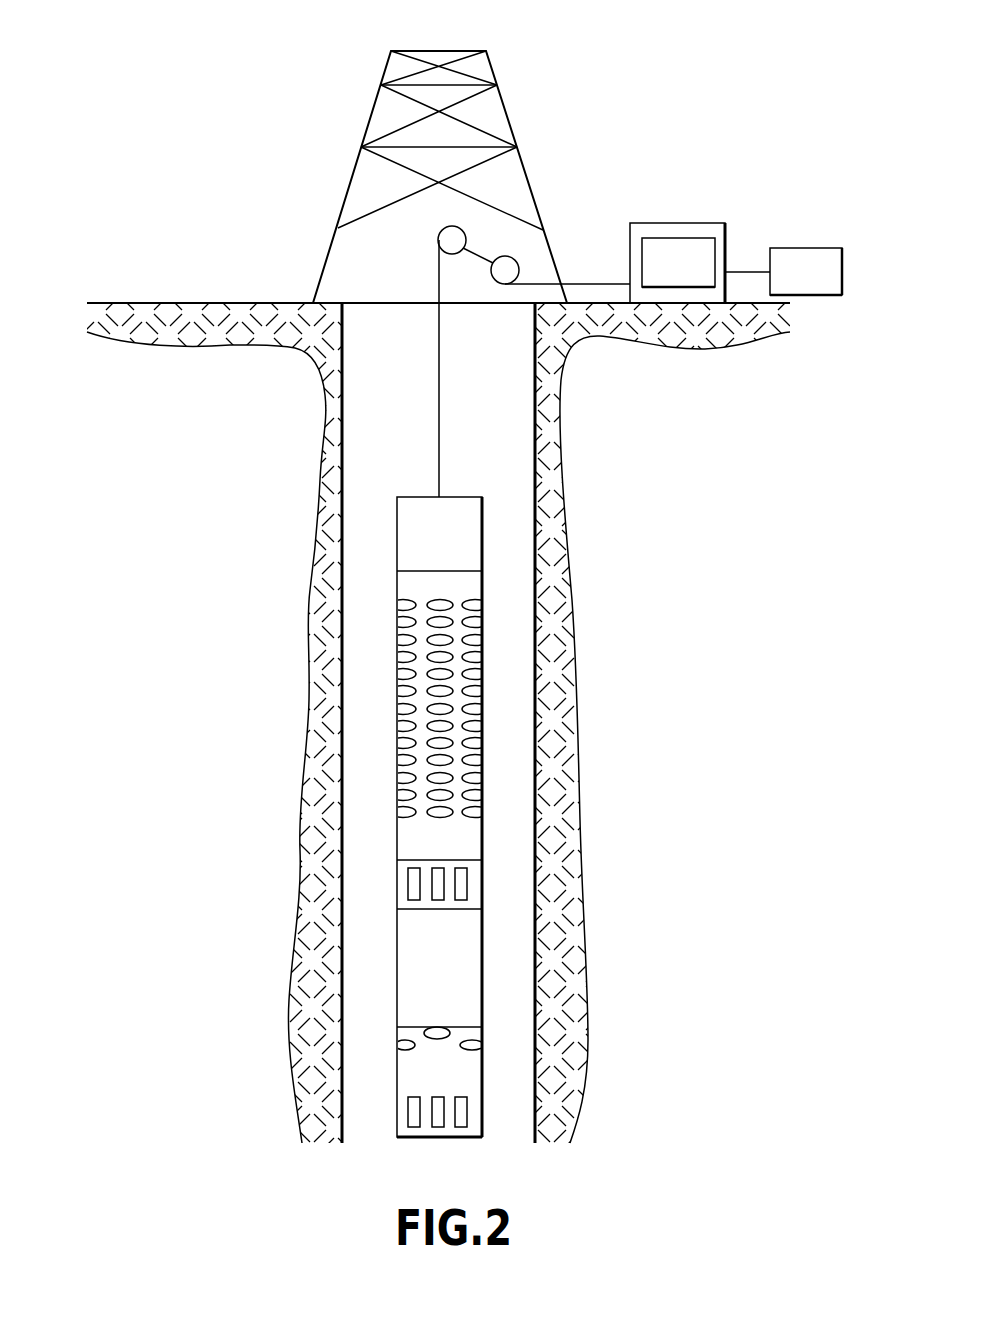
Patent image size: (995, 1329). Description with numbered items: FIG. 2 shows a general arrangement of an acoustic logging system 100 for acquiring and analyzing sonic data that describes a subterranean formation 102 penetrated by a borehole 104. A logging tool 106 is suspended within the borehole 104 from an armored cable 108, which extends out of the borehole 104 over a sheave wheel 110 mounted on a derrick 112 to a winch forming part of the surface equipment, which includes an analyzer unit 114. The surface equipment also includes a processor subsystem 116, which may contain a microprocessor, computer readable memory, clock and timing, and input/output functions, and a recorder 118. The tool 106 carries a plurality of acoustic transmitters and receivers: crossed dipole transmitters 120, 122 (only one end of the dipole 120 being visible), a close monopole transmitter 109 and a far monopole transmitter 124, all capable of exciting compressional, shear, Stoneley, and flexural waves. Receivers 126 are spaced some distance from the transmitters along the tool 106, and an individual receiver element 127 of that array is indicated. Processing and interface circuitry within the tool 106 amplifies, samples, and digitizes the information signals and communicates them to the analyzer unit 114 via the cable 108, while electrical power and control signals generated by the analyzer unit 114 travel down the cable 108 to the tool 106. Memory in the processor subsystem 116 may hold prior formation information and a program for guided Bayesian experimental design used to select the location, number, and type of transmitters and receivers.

The wellbore logging system 100 is at (198, 206).
The subterranean formation 102 is at (322, 470).
The borehole 104 is at (413, 428).
The logging tool 106 is at (482, 548).
The armored cable 108 is at (440, 467).
The monopole transmitter 109 is at (408, 888).
The sheave wheel 110 is at (440, 238).
The derrick 112 is at (507, 114).
The analyzer unit 114 is at (661, 237).
The processor subsystem 116 is at (690, 249).
The recorder 118 is at (788, 248).
The crossed dipole transmitter 120 is at (437, 1033).
The crossed dipole transmitter 122 is at (400, 1046).
The monopole transmitter 124 is at (408, 1118).
The receivers 126 is at (452, 708).
The transducer 127 is at (478, 812).